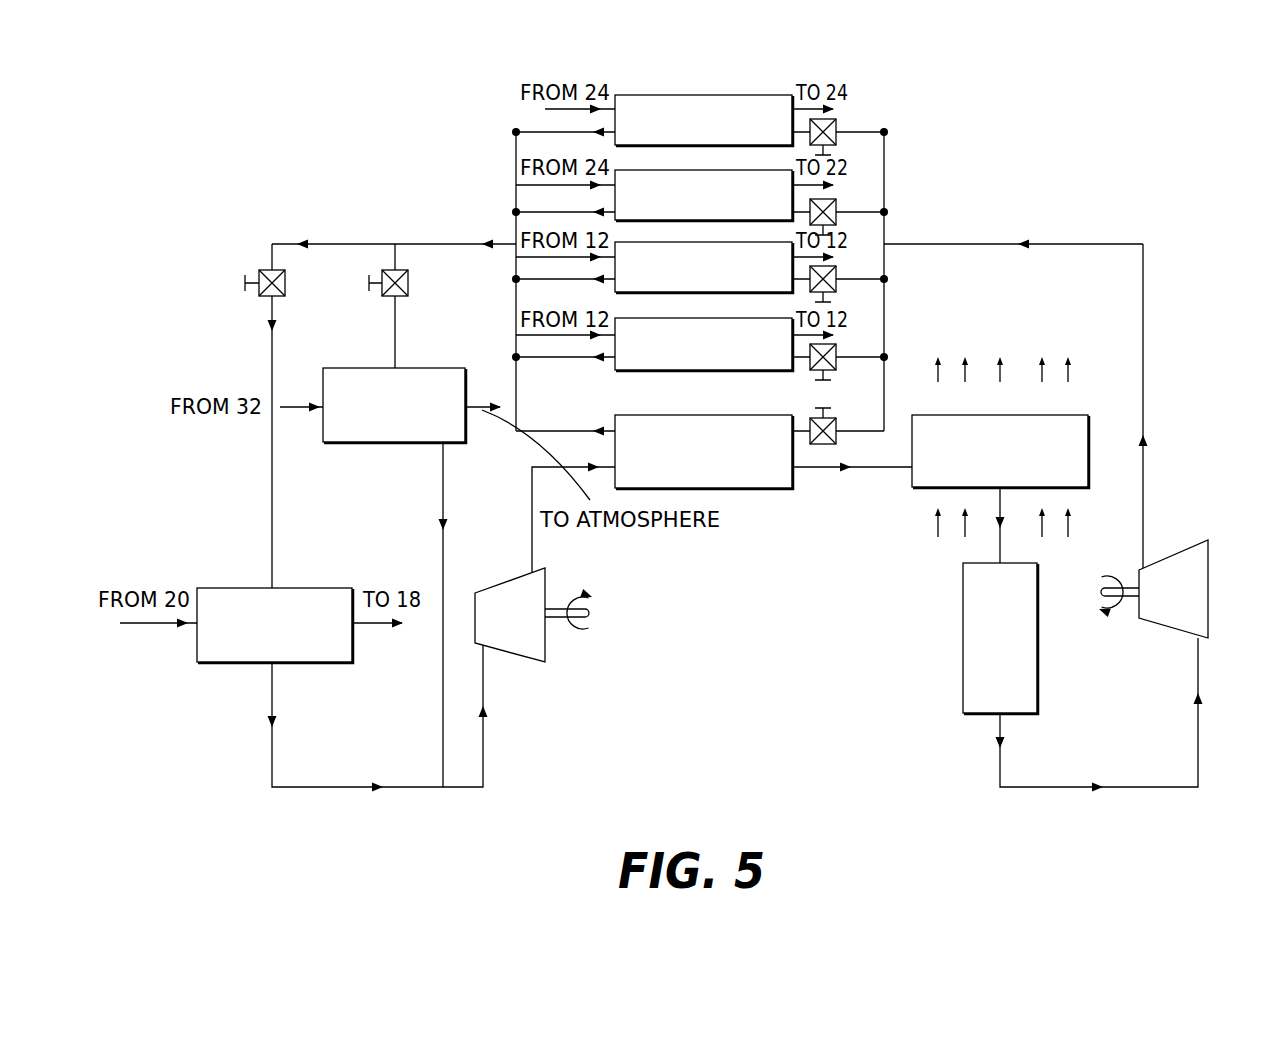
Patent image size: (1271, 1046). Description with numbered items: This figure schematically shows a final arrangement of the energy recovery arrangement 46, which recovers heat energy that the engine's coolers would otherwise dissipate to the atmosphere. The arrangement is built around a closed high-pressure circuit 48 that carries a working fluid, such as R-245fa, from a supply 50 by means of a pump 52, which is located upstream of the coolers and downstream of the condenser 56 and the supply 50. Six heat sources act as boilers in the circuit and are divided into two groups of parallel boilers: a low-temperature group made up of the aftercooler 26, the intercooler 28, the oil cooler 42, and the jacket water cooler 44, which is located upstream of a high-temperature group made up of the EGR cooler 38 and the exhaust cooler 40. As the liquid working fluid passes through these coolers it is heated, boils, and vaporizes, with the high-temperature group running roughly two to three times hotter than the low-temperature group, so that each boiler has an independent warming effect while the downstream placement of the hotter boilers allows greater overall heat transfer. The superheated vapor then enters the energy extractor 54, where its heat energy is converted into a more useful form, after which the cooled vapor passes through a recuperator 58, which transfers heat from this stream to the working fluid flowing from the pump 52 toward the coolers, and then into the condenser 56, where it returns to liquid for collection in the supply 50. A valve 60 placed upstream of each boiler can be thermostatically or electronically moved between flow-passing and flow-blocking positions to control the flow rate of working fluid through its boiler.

The energy recovery arrangement 46 is at (1152, 115).
The closed high-pressure circuit 48 is at (1143, 472).
The intercooler 28 is at (724, 132).
The aftercooler 26 is at (724, 206).
The oil cooler 42 is at (724, 277).
The jacket water cooler 44 is at (724, 355).
The recuperator 58 is at (724, 458).
The exhaust cooler 40 is at (415, 415).
The EGR cooler 38 is at (295, 632).
The condenser 56 is at (1021, 462).
The supply 50 is at (1021, 642).
The pump 52 is at (1195, 604).
The energy extractor 54 is at (530, 627).
The valve 60 is at (285, 279).